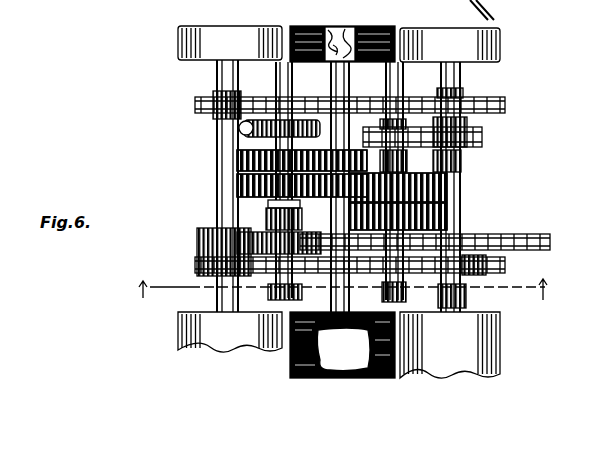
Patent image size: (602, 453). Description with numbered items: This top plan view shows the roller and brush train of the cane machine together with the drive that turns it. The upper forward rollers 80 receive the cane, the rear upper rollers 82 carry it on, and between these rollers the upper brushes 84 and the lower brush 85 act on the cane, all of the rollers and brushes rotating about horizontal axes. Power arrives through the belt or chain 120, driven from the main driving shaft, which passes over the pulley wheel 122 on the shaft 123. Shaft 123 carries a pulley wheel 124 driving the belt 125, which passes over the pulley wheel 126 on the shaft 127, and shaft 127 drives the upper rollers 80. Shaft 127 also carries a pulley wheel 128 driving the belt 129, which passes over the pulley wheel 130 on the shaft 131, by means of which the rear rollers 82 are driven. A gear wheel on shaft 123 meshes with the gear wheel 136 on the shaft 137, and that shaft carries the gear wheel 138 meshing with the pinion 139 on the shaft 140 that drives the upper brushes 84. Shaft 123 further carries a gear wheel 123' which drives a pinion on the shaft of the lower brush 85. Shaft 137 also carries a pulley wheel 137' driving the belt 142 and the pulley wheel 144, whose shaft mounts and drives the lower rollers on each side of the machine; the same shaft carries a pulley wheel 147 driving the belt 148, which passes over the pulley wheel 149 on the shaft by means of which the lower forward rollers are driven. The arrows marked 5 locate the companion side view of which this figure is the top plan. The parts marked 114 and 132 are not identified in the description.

The section line 5- 5 is at (337, 289).
The upper forward rollers 80 is at (500, 43).
The rear upper rollers 82 is at (180, 40).
The upper brushes 84 is at (392, 27).
The lower brush 85 is at (300, 26).
The collar 114 is at (258, 122).
The belt or chain 120 is at (495, 233).
The pulley wheel 122 is at (341, 340).
The shaft 123 is at (352, 13).
The gear wheel 123' is at (425, 223).
The pulley wheel 124 is at (462, 167).
The belt 125 is at (470, 128).
The pulley wheel 126 is at (478, 148).
The shaft 127 is at (458, 298).
The pulley wheel 128 is at (475, 100).
The belt 129 is at (358, 105).
The pulley wheel 130 is at (214, 95).
The shaft 131 is at (222, 135).
The sprocket 132 is at (237, 240).
The gear wheel 136 is at (245, 196).
The shaft 137 is at (226, 180).
The pulley wheel 137' is at (259, 344).
The gear wheel 138 is at (237, 163).
The pinion 139 is at (313, 104).
The shaft 140 is at (341, 360).
The belt 142 is at (247, 315).
The pulley wheel 144 is at (197, 257).
The pulley wheel 147 is at (215, 283).
The belt 148 is at (292, 294).
The pulley wheel 149 is at (486, 258).